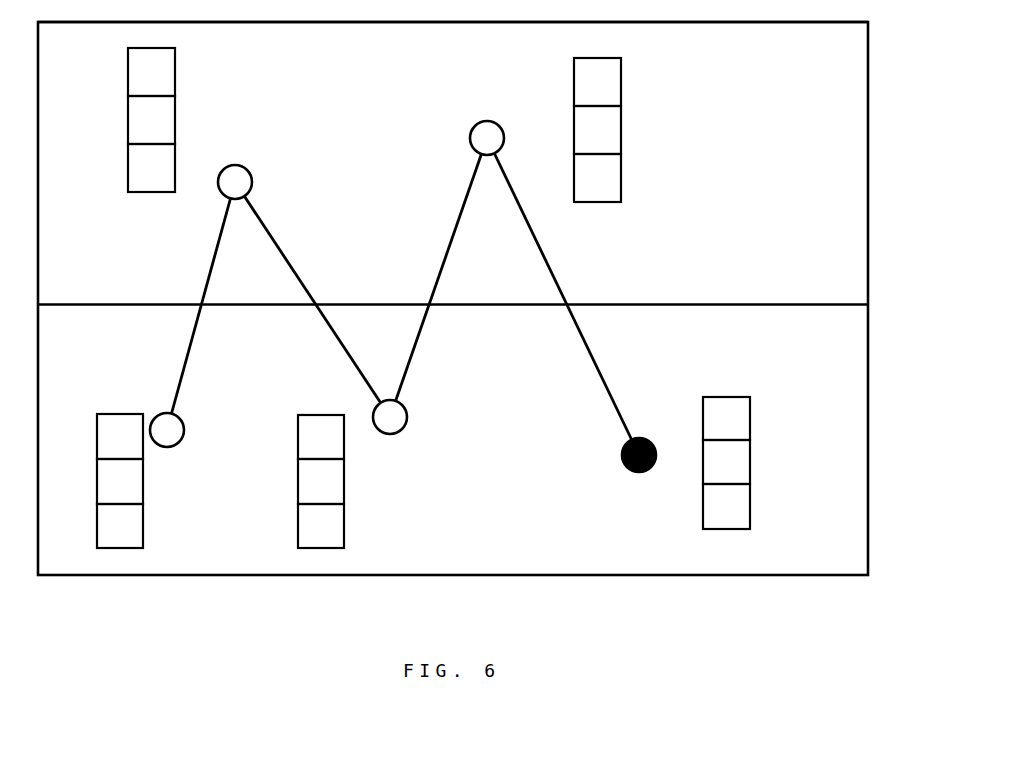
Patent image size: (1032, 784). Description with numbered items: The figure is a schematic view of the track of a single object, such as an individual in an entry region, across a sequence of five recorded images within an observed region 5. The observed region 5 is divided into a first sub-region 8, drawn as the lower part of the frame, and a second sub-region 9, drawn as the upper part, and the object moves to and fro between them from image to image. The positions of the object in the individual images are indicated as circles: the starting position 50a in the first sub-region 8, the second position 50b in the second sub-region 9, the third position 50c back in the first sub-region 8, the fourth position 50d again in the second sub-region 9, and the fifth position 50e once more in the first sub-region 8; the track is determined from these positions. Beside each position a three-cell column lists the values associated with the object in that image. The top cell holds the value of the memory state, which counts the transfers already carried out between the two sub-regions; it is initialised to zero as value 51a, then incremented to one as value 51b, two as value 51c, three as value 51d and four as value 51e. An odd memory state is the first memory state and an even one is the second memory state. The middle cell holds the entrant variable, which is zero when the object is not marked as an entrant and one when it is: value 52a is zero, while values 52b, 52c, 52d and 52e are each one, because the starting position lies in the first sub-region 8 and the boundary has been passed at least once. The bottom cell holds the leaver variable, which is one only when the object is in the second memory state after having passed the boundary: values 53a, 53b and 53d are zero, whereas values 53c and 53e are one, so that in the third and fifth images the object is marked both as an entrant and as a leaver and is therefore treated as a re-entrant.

The observed region 5 is at (868, 190).
The first sub-region 8 is at (813, 565).
The second sub-region 9 is at (843, 70).
The starting position 50a is at (180, 442).
The second position 50b is at (247, 170).
The third position 50c is at (399, 432).
The fourth position 50d is at (471, 128).
The fifth position 50e is at (633, 471).
The value of the memory state 51a is at (96, 434).
The value of the entrant variable 52a is at (96, 482).
The value of the leaver variable 53a is at (96, 535).
The value of the memory state 51b is at (127, 70).
The value of the entrant variable 52b is at (127, 125).
The value of the leaver variable 53b is at (127, 181).
The value of the memory state 51c is at (297, 425).
The value of the entrant variable 52c is at (297, 482).
The value of the leaver variable 53c is at (297, 537).
The value of the memory state 51d is at (573, 70).
The value of the entrant variable 52d is at (573, 132).
The value of the leaver variable 53d is at (573, 188).
The value of the memory state 51e is at (751, 409).
The value of the entrant variable 52e is at (751, 467).
The value of the leaver variable 53e is at (751, 517).